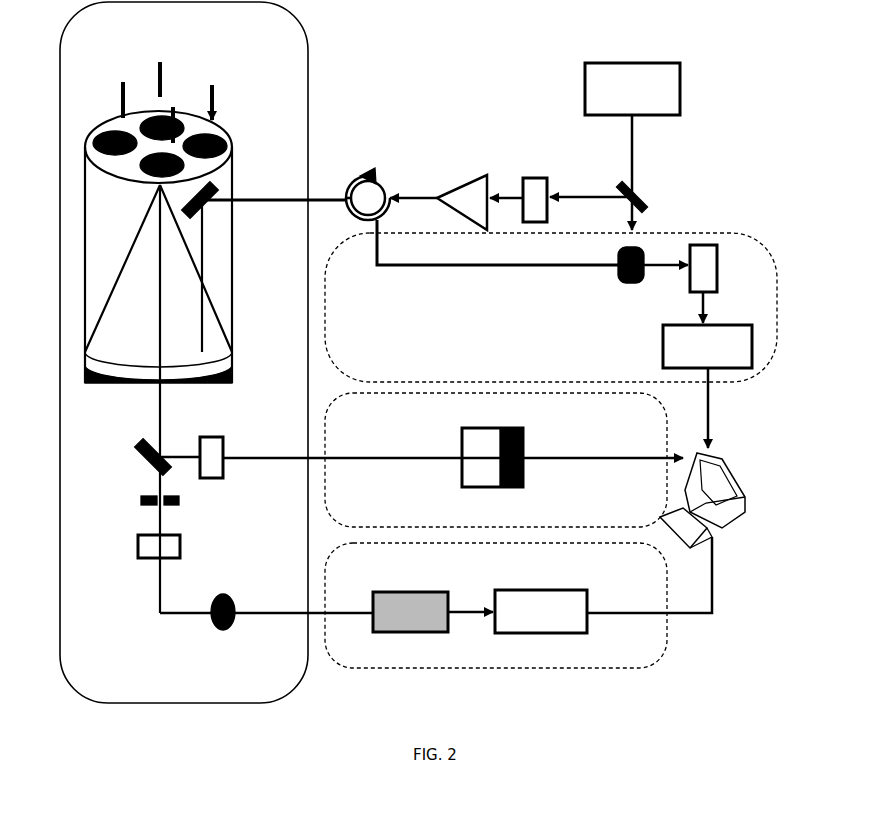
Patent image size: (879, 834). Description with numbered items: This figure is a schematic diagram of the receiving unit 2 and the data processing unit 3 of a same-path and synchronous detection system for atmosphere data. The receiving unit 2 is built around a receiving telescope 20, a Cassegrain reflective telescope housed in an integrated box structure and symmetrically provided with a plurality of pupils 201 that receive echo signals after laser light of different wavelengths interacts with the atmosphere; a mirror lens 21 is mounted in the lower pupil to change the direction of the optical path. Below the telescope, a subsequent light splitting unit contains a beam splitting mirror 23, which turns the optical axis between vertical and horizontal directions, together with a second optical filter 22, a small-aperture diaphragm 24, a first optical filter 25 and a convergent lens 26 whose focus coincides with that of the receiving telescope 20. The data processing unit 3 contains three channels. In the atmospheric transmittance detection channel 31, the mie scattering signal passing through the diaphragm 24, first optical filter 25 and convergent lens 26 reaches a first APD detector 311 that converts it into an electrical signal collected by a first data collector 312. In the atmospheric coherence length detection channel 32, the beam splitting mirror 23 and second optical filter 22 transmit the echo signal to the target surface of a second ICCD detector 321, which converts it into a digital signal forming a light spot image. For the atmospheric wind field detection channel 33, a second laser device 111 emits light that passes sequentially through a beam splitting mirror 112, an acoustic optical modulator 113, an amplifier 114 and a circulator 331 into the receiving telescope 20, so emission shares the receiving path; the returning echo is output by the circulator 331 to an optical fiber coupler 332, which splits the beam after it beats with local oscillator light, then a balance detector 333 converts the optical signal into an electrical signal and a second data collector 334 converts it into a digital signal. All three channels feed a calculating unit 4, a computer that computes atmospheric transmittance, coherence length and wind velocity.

The receiving unit 2 is at (293, 42).
The receiving telescope 20 is at (113, 123).
The pupils 201 is at (227, 135).
The mirror lens 21 is at (220, 192).
The second optical filter 22 is at (223, 445).
The beam splitting mirror 23 is at (143, 455).
The small-aperture diaphragm 24 is at (140, 500).
The first optical filter 25 is at (138, 545).
The convergent lens 26 is at (230, 628).
The second laser device 111 is at (632, 89).
The beam splitting mirror 112 is at (645, 197).
The acoustic optical modulator 113 is at (547, 185).
The amplifier 114 is at (487, 178).
The circulator 331 is at (388, 178).
The optical fiber coupler 332 is at (635, 283).
The balance detector 333 is at (705, 270).
The second data collector 334 is at (663, 346).
The atmospheric wind field detection channel 33 is at (723, 385).
The atmospheric coherence length detection channel 32 is at (653, 415).
The second ICCD detector 321 is at (490, 487).
The atmospheric transmittance detection channel 31 is at (660, 660).
The first APD detector 311 is at (415, 632).
The first data collector 312 is at (557, 633).
The data processing unit 3 is at (755, 407).
The calculating unit 4 is at (722, 533).